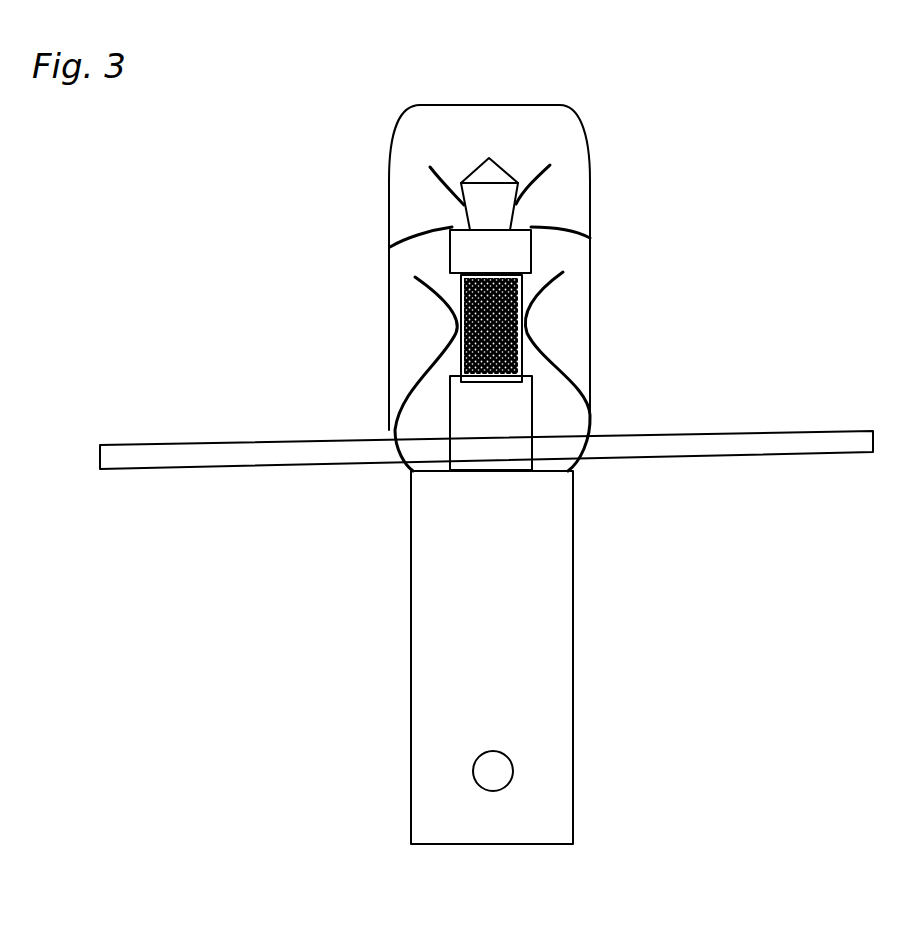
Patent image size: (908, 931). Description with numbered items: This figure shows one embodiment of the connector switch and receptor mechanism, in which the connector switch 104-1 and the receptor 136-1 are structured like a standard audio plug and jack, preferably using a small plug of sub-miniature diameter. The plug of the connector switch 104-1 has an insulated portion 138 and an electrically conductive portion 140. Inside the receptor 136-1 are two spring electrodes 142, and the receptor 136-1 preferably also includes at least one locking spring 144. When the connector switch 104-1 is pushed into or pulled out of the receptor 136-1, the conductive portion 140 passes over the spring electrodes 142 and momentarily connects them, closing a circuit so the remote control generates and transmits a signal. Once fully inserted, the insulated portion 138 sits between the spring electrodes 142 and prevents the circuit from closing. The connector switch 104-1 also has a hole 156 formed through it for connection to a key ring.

The receptor 136-1 is at (489, 267).
The locking spring 144 is at (443, 189).
The spring electrodes 142 is at (427, 293).
The electrically conductive portion 140 is at (530, 248).
The insulated portion 138 is at (522, 356).
The connector switch 104-1 is at (573, 653).
The hole 156 is at (510, 784).